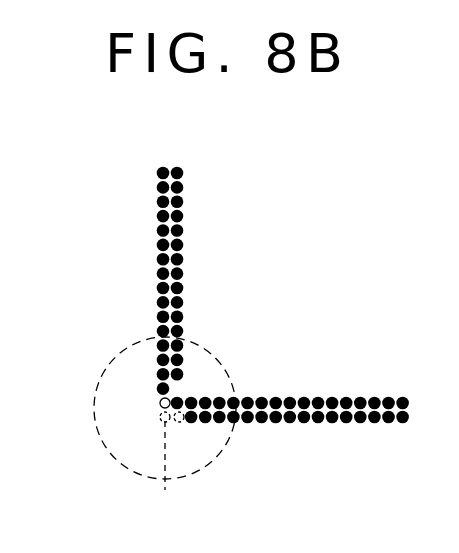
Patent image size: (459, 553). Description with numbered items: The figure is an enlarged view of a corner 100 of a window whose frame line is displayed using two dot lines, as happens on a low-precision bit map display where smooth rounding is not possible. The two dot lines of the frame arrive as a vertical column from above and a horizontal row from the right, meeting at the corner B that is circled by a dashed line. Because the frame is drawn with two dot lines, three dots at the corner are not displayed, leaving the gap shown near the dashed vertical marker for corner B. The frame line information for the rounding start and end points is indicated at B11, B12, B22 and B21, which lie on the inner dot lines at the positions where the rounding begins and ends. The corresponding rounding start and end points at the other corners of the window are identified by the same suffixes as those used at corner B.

The corner 100 is at (210, 354).
The rounding start and end point B11 is at (158, 386).
The rounding start and end point B12 is at (87, 409).
The rounding start and end point B22 is at (160, 404).
The rounding start and end point B21 is at (194, 422).
The corner B is at (167, 476).